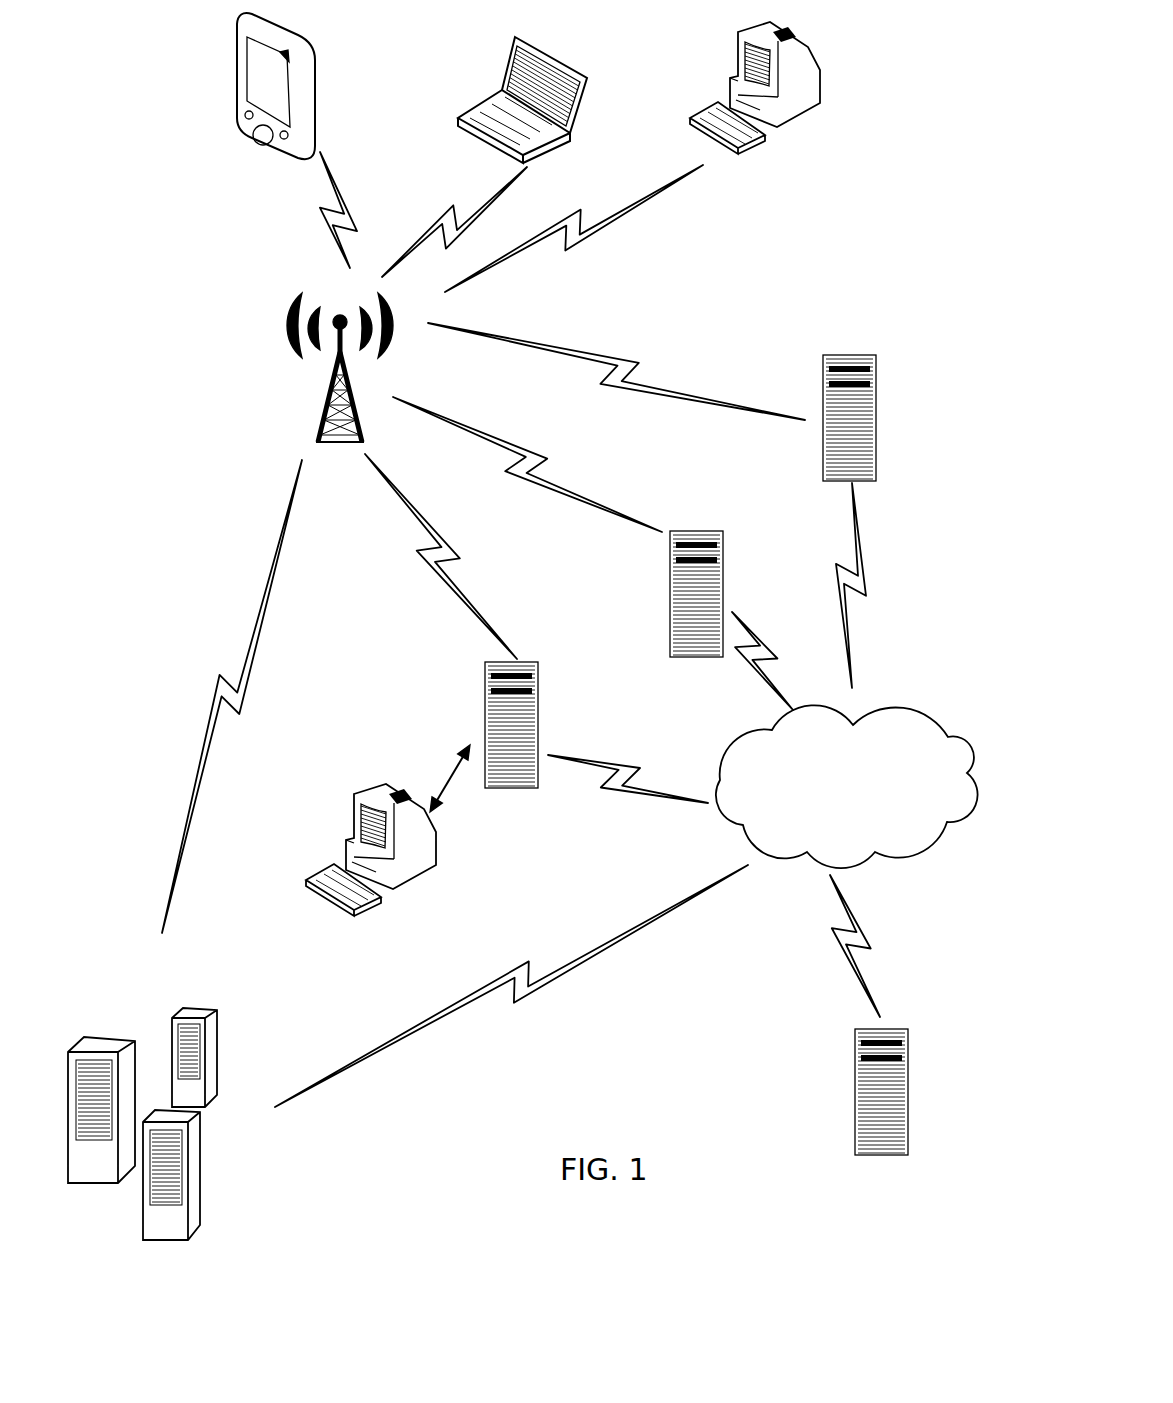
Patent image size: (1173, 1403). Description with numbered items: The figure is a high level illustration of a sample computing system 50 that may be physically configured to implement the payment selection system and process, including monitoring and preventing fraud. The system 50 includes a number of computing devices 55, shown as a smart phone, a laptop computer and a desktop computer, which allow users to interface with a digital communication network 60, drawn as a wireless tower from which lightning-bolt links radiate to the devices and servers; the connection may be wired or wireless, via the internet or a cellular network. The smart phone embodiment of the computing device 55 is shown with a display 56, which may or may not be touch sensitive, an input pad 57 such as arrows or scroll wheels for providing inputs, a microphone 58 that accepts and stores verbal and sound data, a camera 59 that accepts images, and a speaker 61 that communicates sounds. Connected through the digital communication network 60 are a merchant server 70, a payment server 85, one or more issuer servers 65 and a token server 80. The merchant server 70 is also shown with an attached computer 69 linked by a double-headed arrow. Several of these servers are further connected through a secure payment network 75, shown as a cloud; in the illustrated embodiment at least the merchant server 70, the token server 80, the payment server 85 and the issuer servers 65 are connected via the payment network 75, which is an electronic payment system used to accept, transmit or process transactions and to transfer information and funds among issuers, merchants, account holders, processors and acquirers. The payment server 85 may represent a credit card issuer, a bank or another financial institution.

The computing system 50 is at (178, 318).
The computing device 55 is at (237, 42).
The display 56 is at (262, 75).
The input pad 57 is at (250, 150).
The microphone 58 is at (238, 114).
The camera 59 is at (285, 56).
The digital communication network 60 is at (300, 392).
The speaker 61 is at (283, 160).
The issuer server 65 is at (862, 412).
The computer 69 is at (378, 790).
The merchant server 70 is at (527, 727).
The payment network 75 is at (868, 799).
The token server 80 is at (893, 1090).
The payment server 85 is at (215, 1172).